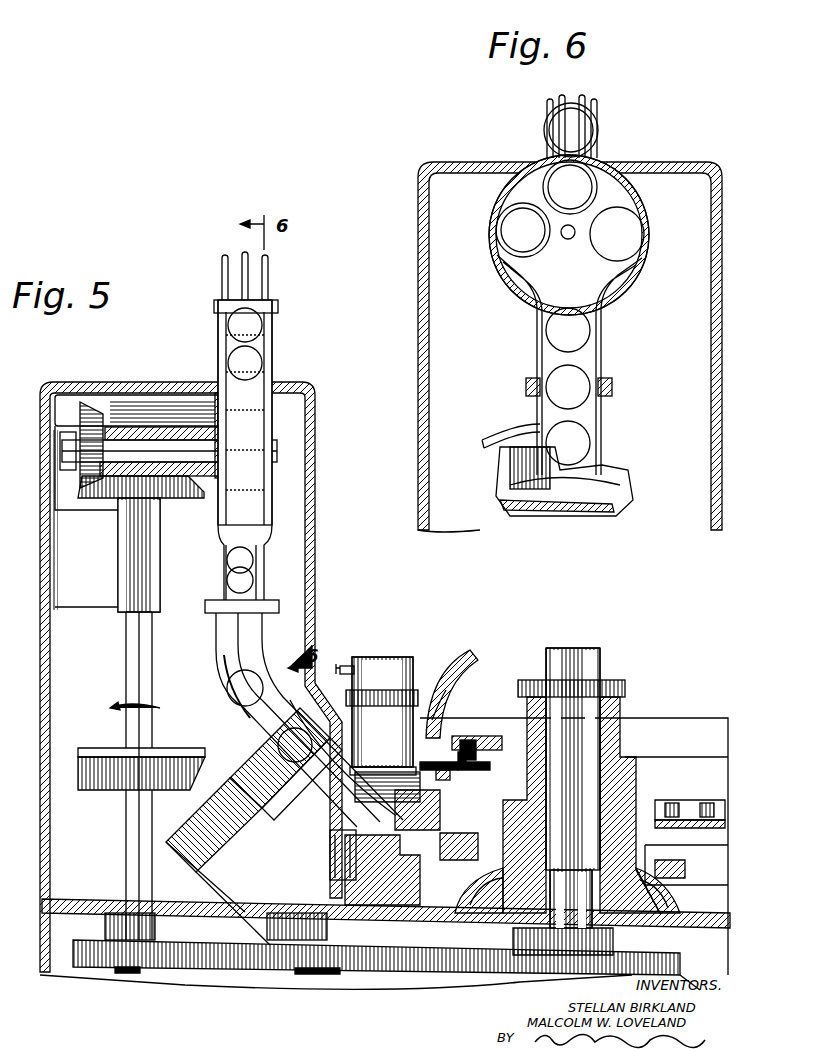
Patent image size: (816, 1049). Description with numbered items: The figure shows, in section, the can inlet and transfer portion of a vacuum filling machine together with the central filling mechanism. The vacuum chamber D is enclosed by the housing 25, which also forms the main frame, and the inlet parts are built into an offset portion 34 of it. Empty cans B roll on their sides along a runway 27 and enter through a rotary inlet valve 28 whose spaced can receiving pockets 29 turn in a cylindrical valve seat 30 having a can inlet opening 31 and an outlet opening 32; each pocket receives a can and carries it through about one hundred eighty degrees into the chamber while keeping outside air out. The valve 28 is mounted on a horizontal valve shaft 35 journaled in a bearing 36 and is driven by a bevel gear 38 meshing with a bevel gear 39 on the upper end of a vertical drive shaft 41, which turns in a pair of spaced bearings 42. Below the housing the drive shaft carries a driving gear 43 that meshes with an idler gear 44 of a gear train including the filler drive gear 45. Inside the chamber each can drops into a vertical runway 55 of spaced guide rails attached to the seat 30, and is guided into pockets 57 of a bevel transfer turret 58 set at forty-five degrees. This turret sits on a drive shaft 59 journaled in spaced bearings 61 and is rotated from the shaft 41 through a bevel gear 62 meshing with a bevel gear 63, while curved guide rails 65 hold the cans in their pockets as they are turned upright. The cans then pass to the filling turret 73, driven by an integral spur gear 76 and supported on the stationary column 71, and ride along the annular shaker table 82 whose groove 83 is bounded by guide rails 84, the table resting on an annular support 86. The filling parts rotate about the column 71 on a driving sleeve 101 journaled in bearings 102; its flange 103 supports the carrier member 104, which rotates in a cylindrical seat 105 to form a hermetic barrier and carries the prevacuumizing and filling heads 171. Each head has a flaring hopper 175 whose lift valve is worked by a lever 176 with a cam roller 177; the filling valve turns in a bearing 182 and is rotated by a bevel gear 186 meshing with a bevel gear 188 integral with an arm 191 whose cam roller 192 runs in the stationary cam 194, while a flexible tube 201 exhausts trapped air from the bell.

In FIG. 5, the housing 25 is at (708, 918).
In FIG. 6, the runway 27 is at (582, 98).
In FIG. 5, the runway 27 is at (262, 262).
In FIG. 6, the rotary inlet valve 28 is at (610, 194).
In FIG. 5, the rotary inlet valve 28 is at (266, 452).
In FIG. 6, the can receiving pockets 29 is at (540, 194).
In FIG. 5, the can receiving pockets 29 is at (262, 482).
In FIG. 6, the cylindrical valve seat 30 is at (498, 243).
In FIG. 5, the cylindrical valve seat 30 is at (266, 494).
In FIG. 6, the can inlet opening 31 is at (596, 162).
In FIG. 5, the can inlet opening 31 is at (252, 390).
In FIG. 6, the outlet opening 32 is at (535, 305).
In FIG. 5, the outlet opening 32 is at (264, 530).
In FIG. 6, the offset portion 34 is at (711, 430).
In FIG. 5, the offset portion 34 is at (306, 522).
In FIG. 6, the valve shaft 35 is at (568, 240).
In FIG. 5, the valve shaft 35 is at (150, 448).
In FIG. 5, the bearing 36 is at (138, 430).
In FIG. 5, the bevel gear 38 is at (92, 404).
In FIG. 5, the bevel gear 39 is at (180, 498).
In FIG. 5, the vertical drive shaft 41 is at (142, 648).
In FIG. 5, the bearings 42 is at (146, 578).
In FIG. 5, the driving gear 43 is at (88, 947).
In FIG. 5, the idler gear 44 is at (232, 972).
In FIG. 5, the filler drive gear 45 is at (460, 978).
In FIG. 6, the vertical runway 55 is at (588, 362).
In FIG. 5, the vertical runway 55 is at (250, 580).
In FIG. 6, the pockets 57 is at (594, 446).
In FIG. 5, the pockets 57 is at (250, 738).
In FIG. 6, the bevel transfer turret 58 is at (603, 488).
In FIG. 5, the bevel transfer turret 58 is at (310, 790).
In FIG. 5, the drive shaft 59 is at (222, 852).
In FIG. 5, the bearings 61 is at (252, 766).
In FIG. 5, the bevel gear 62 is at (94, 752).
In FIG. 5, the bevel gear 63 is at (272, 824).
In FIG. 6, the curved guide rails 65 is at (482, 444).
In FIG. 5, the curved guide rails 65 is at (242, 708).
In FIG. 5, the stationary vertical cylindrical column 71 is at (622, 778).
In FIG. 5, the filling turret 73 is at (722, 822).
In FIG. 5, the spur gear 76 is at (686, 868).
In FIG. 5, the shaker table 82 is at (440, 862).
In FIG. 5, the groove 83 is at (330, 872).
In FIG. 5, the guide rails 84 is at (330, 848).
In FIG. 5, the annular support 86 is at (362, 892).
In FIG. 5, the driving sleeve 101 is at (582, 786).
In FIG. 5, the bearings 102 is at (620, 735).
In FIG. 5, the flange 103 is at (626, 688).
In FIG. 5, the carrier member 104 is at (474, 650).
In FIG. 5, the cylindrical seat 105 is at (700, 718).
In FIG. 5, the prevacuumizing and filling head 171 is at (384, 728).
In FIG. 5, the hopper 175 is at (390, 664).
In FIG. 5, the lever 176 is at (358, 665).
In FIG. 5, the cam roller 177 is at (338, 664).
In FIG. 5, the bearing 182 is at (387, 787).
In FIG. 5, the bevel gear 186 is at (444, 770).
In FIG. 5, the bevel gear 188 is at (458, 772).
In FIG. 5, the arm 191 is at (486, 770).
In FIG. 5, the cam roller 192 is at (466, 740).
In FIG. 5, the stationary cam 194 is at (492, 746).
In FIG. 5, the flexible tube 201 is at (430, 690).
In FIG. 6, the cans B is at (580, 126).
In FIG. 5, the cans B is at (256, 346).
In FIG. 6, the vacuum chamber D is at (688, 311).
In FIG. 5, the vacuum chamber D is at (294, 600).